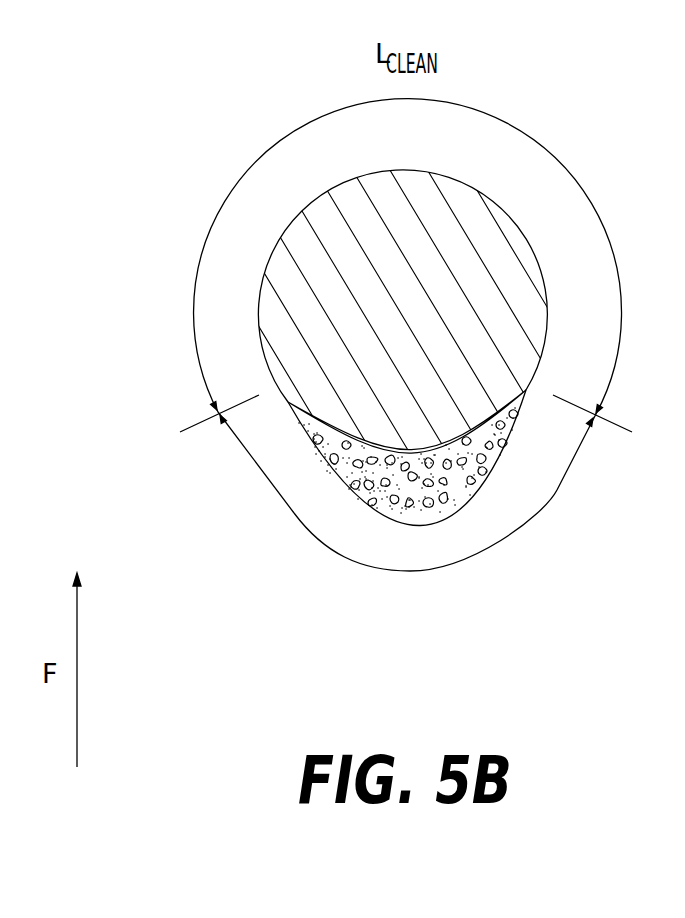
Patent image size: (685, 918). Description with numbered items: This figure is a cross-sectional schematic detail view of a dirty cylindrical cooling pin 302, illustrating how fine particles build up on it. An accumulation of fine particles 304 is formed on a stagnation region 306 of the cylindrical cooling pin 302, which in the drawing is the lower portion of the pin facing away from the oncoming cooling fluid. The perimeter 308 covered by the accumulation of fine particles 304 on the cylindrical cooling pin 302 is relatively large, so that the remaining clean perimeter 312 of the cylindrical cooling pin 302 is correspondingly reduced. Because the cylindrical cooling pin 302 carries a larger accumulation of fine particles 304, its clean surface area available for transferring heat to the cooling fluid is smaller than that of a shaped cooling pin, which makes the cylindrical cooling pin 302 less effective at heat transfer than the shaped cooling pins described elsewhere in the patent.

The cylindrical cooling pin 302 is at (529, 311).
The accumulation of fine particles 304 is at (437, 502).
The stagnation region 306 is at (452, 446).
The perimeter covered by the accumulation of fine particles 308 is at (407, 570).
The remaining clean perimeter 312 is at (575, 181).